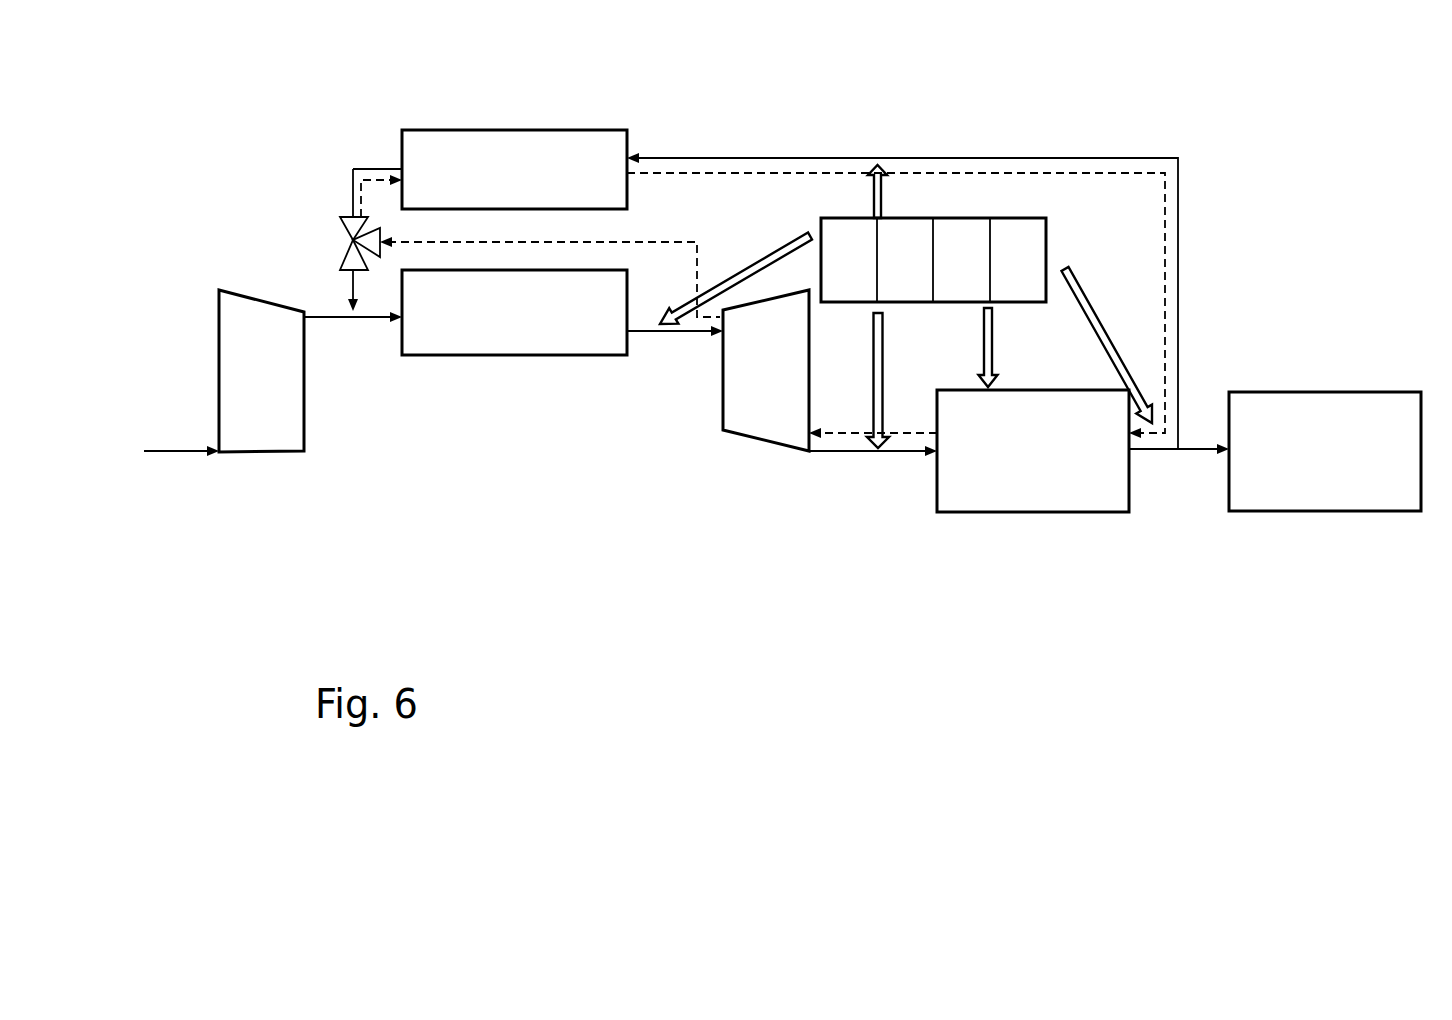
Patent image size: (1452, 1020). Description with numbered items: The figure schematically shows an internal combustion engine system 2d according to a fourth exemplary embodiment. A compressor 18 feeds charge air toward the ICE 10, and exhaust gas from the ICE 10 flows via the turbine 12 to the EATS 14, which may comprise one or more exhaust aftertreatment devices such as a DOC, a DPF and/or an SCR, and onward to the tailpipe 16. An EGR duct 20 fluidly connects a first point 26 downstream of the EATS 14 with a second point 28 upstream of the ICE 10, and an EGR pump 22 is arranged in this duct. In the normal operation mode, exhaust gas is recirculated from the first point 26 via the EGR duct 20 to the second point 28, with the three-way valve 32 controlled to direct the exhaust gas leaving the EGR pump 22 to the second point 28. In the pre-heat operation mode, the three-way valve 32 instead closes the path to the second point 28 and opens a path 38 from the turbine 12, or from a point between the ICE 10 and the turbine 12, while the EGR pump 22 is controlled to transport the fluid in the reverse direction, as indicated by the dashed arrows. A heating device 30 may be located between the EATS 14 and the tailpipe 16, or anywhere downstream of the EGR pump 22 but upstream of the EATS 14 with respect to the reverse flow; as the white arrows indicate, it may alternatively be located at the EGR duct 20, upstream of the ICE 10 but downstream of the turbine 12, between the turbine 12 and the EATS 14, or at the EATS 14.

The internal combustion engine system 2d is at (280, 132).
The ICE 10 is at (532, 330).
The turbine 12 is at (775, 418).
The EATS 14 is at (1028, 497).
The tailpipe 16 is at (1283, 488).
The compressor 18 is at (273, 405).
The EGR duct 20 is at (978, 157).
The EGR pump 22 is at (502, 167).
The first point 26 is at (1175, 450).
The second point 28 is at (353, 317).
The heating device 30 is at (932, 218).
The three-way valve 32 is at (355, 238).
The path 38 is at (662, 240).